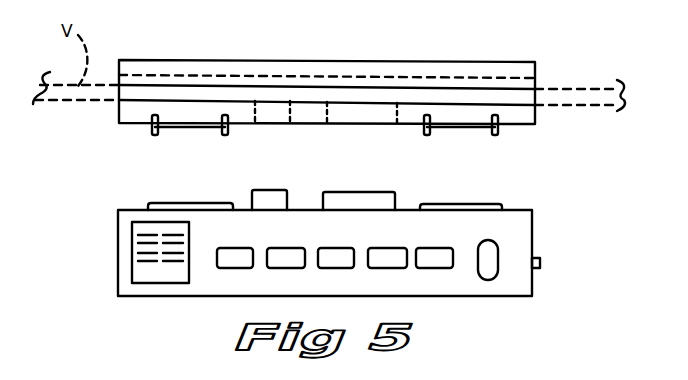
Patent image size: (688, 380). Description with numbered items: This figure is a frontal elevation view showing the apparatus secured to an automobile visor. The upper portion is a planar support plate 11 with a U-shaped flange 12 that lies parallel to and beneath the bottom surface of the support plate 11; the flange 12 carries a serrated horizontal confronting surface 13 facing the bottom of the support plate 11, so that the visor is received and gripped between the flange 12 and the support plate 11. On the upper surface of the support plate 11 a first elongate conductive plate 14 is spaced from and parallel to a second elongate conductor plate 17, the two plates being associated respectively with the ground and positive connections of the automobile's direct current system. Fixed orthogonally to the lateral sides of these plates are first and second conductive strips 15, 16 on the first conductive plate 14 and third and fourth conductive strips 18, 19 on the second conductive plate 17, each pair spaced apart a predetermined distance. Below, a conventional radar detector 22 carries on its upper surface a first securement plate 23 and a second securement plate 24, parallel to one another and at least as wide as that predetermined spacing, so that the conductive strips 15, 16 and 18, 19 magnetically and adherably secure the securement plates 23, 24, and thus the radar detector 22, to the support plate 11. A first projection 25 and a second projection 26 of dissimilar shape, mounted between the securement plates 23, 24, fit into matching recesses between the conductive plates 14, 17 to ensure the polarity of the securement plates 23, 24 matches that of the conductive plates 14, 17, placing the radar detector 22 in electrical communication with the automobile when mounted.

The support plate 11 is at (535, 113).
The U shaped flange 12 is at (538, 89).
The serrated horizontal confronting surface 13 is at (546, 75).
The first elongate conductive plate 14 is at (475, 131).
The first conductive strip 15 is at (223, 133).
The second conductive strip 16 is at (151, 133).
The second elongate conductor plate 17 is at (186, 131).
The third conductive strip 18 is at (497, 134).
The fourth conductive strip 19 is at (442, 137).
The radar detector 22 is at (533, 221).
The first securement plate 23 is at (150, 202).
The second securement plate 24 is at (488, 203).
The first projection 25 is at (292, 191).
The second projection 26 is at (254, 128).